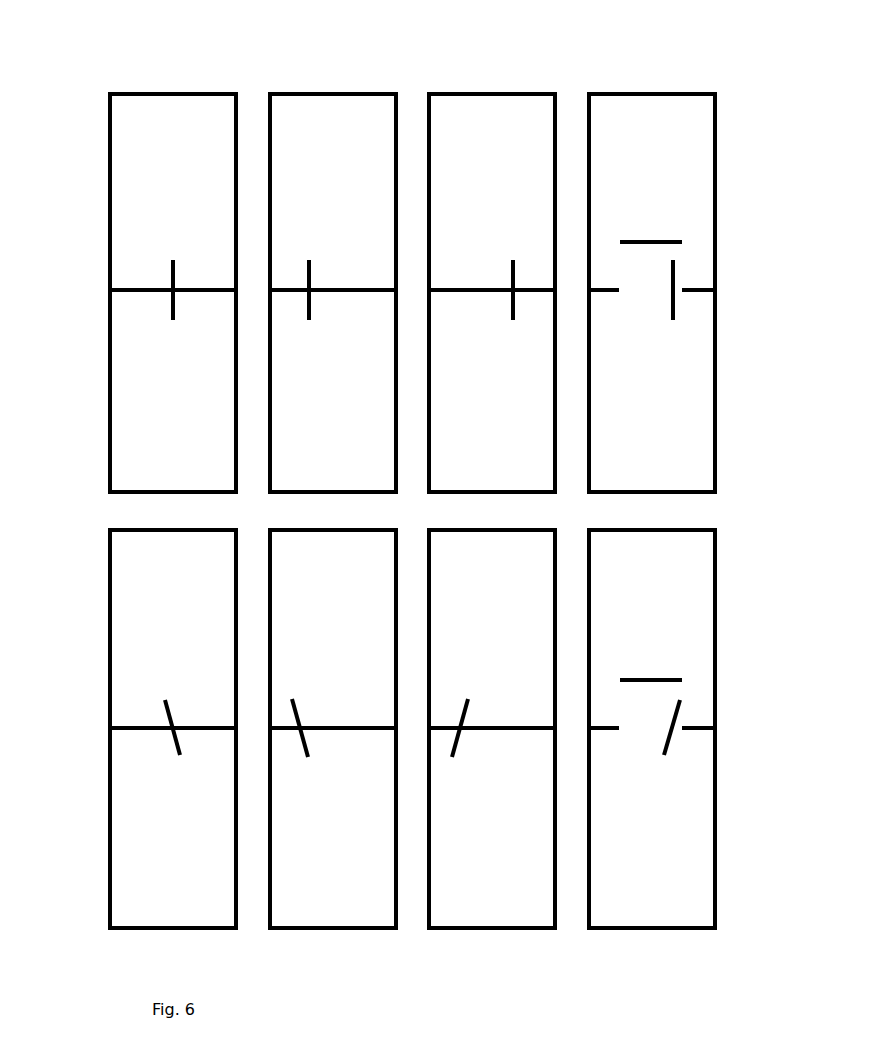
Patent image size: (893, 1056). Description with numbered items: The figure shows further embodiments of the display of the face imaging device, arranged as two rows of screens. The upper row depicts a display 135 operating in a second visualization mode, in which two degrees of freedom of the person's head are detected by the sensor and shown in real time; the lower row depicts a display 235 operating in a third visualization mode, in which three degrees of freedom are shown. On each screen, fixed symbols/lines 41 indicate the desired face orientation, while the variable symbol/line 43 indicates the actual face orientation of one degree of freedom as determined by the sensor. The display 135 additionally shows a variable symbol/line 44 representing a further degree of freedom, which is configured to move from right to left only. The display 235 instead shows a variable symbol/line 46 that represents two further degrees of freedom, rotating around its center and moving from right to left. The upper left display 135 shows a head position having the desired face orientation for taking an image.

The display 135 is at (329, 91).
The display 235 is at (176, 930).
The symbols/lines 41 is at (612, 293).
The symbol/line 43 is at (650, 240).
The symbol/line 44 is at (171, 268).
The symbol/line 46 is at (181, 757).